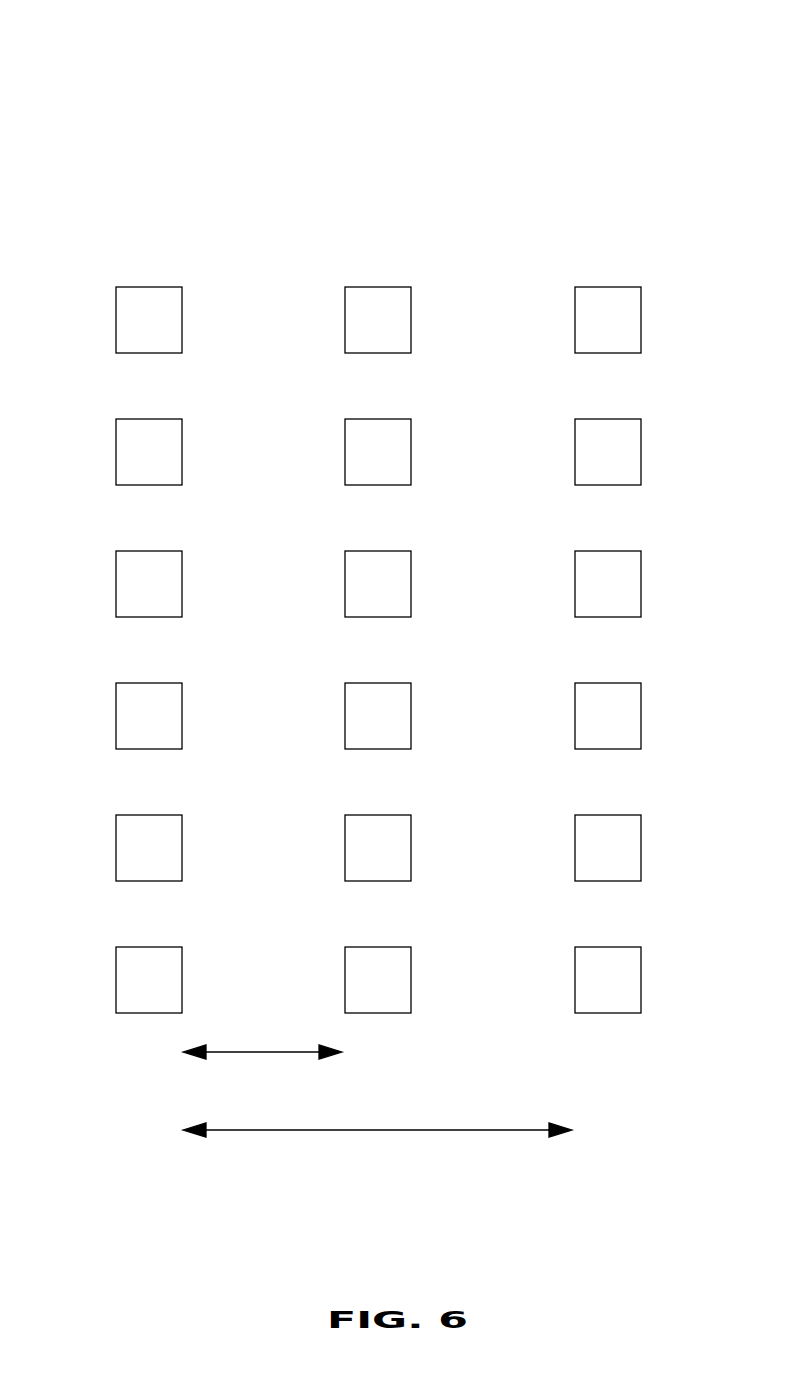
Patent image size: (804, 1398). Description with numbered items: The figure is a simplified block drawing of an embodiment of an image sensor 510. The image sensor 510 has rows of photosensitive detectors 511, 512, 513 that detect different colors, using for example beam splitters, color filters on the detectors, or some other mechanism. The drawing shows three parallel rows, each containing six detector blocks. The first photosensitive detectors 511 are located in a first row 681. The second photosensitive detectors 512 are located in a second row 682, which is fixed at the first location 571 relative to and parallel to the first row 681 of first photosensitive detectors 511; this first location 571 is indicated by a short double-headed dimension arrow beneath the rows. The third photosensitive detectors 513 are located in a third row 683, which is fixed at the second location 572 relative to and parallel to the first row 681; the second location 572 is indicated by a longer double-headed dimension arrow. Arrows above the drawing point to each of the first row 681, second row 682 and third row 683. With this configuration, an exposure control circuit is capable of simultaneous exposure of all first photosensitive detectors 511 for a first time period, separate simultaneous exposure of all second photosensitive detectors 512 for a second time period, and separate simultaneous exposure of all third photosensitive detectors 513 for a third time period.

The image sensor 510 is at (141, 78).
The first photosensitive detectors 511 is at (182, 318).
The second photosensitive detectors 512 is at (411, 318).
The third photosensitive detectors 513 is at (641, 318).
The first row 681 is at (148, 250).
The second row 682 is at (378, 250).
The third row 683 is at (608, 250).
The first location 571 is at (242, 1053).
The second location 572 is at (477, 1132).